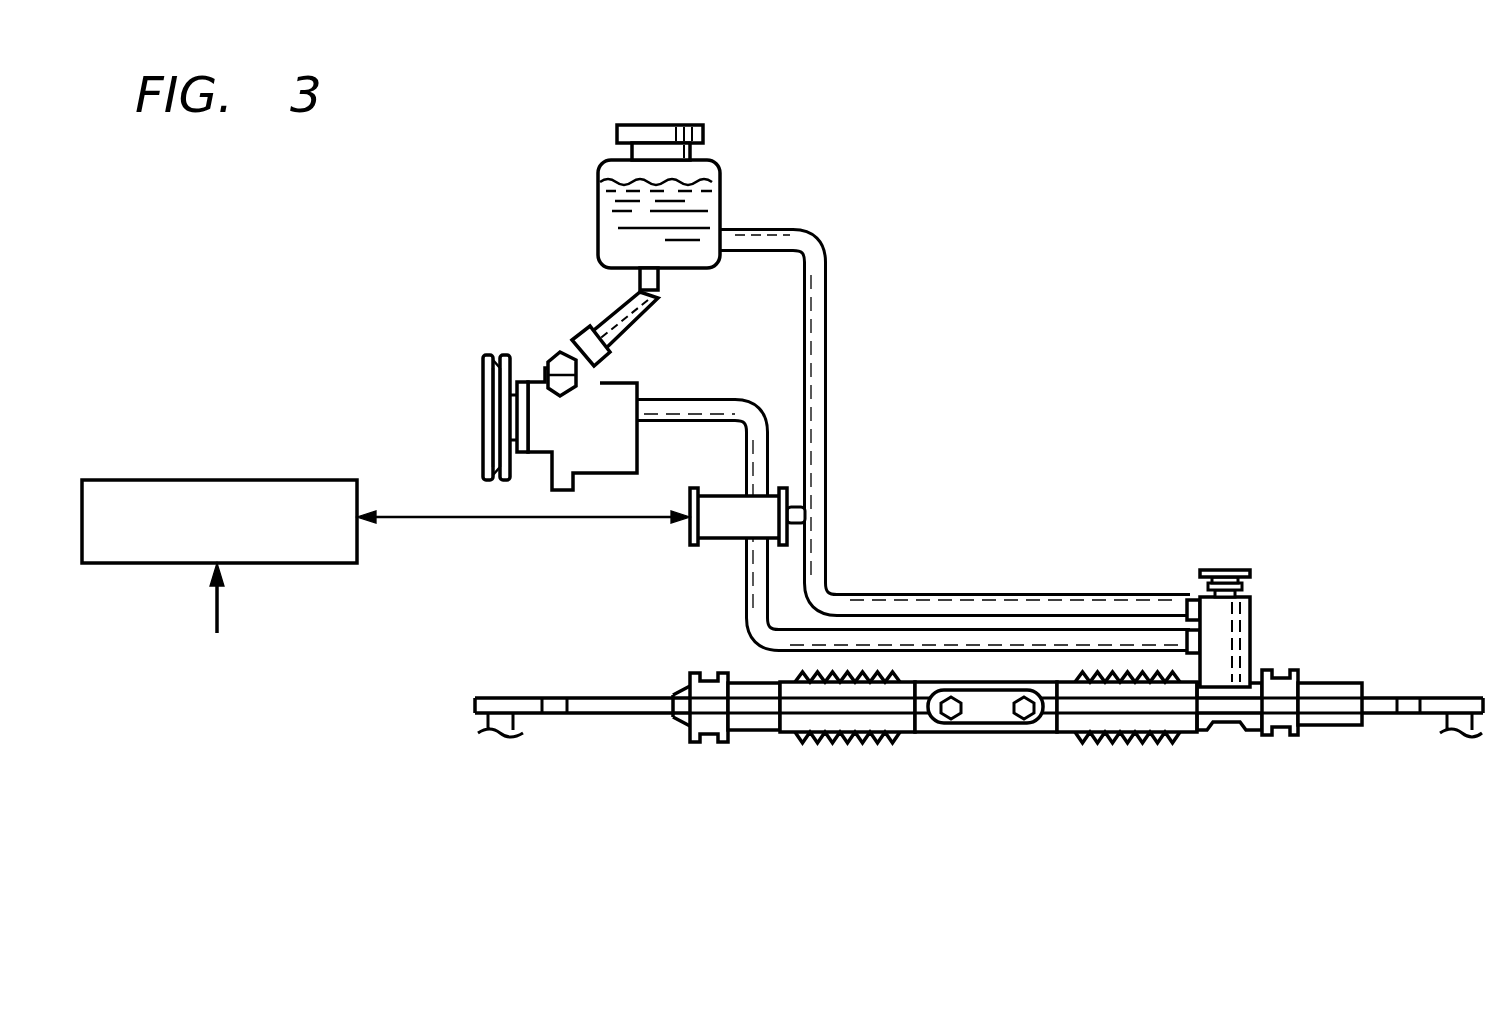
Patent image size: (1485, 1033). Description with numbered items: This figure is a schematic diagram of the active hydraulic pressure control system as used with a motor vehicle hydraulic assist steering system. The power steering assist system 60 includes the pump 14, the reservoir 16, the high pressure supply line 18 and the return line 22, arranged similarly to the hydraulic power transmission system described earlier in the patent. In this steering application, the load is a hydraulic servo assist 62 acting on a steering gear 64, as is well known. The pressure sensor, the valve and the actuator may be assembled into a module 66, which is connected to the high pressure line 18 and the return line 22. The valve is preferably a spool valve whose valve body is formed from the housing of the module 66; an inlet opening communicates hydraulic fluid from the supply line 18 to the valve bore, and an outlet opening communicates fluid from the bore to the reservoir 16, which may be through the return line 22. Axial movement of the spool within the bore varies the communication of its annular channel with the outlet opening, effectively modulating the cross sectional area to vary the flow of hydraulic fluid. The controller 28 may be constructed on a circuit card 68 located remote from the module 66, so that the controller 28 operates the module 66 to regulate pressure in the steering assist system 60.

The pump 14 is at (578, 343).
The reservoir 16 is at (728, 187).
The high pressure supply line 18 is at (690, 398).
The return line 22 is at (828, 383).
The controller 28 is at (139, 540).
The power steering assist system 60 is at (1022, 478).
The hydraulic servo assist 62 is at (1250, 615).
The steering gear 64 is at (990, 725).
The module 66 is at (710, 542).
The circuit card 68 is at (386, 546).